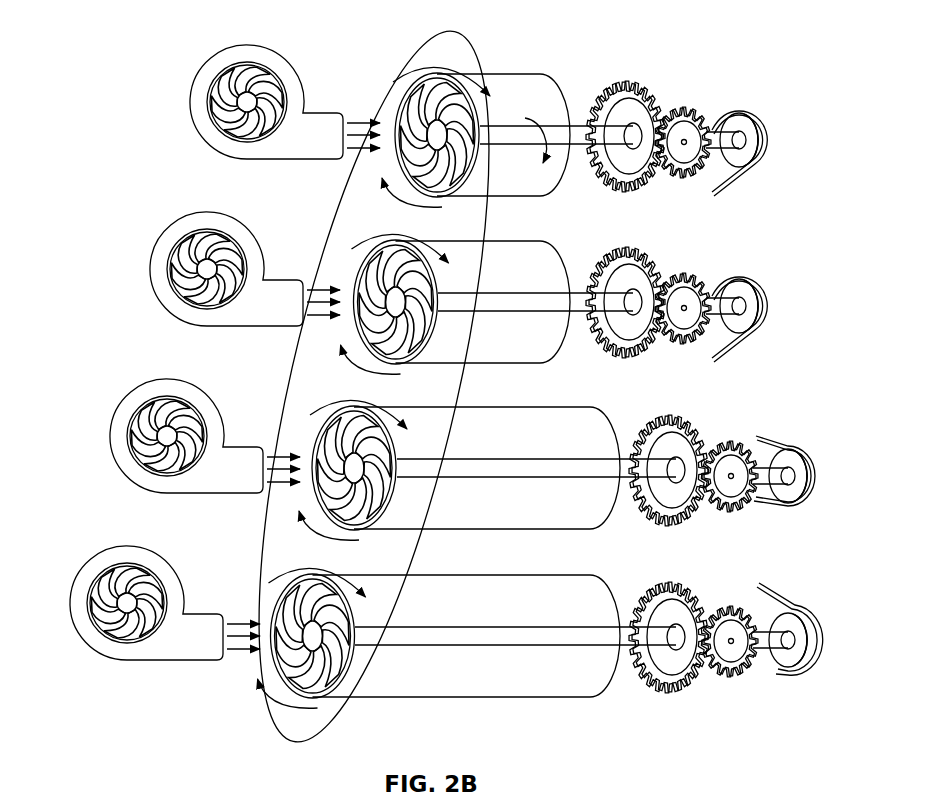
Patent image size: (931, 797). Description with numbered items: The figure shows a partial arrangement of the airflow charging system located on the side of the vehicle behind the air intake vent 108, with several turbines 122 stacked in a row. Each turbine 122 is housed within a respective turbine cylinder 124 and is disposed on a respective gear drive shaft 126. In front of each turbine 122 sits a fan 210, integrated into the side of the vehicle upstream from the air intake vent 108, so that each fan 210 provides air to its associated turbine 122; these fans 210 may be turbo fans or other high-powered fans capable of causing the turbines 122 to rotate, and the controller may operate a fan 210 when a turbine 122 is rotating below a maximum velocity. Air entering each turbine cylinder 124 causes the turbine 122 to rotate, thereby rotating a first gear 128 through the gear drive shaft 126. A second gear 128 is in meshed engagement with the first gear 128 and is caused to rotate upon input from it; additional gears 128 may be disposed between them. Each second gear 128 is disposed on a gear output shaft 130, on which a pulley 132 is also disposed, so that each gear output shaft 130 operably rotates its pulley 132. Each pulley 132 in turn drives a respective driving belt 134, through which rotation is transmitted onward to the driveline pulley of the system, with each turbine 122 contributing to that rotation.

The air intake vent 108 is at (422, 58).
The turbine 122 is at (418, 190).
The turbine cylinder 124 is at (505, 195).
The gear drive shaft 126 is at (575, 150).
The gear 128 is at (645, 182).
The gear output shaft 130 is at (736, 150).
The pulley 132 is at (766, 128).
The driving belt 134 is at (730, 112).
The fan 210 is at (222, 56).